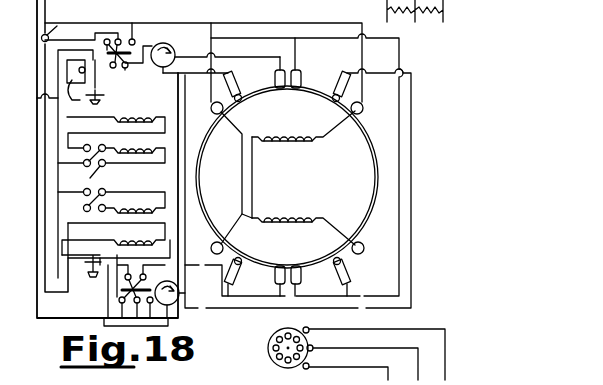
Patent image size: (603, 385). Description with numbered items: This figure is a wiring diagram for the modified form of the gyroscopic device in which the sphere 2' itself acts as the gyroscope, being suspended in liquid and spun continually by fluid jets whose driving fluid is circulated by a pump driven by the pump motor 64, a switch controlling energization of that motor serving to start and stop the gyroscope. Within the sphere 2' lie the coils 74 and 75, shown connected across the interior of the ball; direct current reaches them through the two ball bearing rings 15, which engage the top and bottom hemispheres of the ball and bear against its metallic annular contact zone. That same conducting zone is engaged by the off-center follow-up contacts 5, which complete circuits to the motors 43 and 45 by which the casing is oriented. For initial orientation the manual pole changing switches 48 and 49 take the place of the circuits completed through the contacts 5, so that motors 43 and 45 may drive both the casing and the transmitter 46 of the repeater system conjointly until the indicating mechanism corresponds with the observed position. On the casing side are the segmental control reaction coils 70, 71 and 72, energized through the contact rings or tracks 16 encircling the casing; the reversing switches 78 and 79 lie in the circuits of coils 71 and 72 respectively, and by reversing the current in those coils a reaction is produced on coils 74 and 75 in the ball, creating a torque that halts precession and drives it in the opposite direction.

The sphere 2' is at (287, 177).
The contacts 5 is at (252, 68).
The ball bearing rings 15 is at (224, 109).
The contact rings or tracks 16 is at (100, 256).
The motor 43 is at (173, 50).
The motor 45 is at (170, 282).
The transmitter 46 is at (85, 97).
The pole changing switch 48 is at (118, 68).
The pole changing switch 49 is at (136, 286).
The pump motor 64 is at (283, 362).
The segmental coil 70 is at (140, 113).
The segmental coil 71 is at (130, 155).
The segmental coil 72 is at (142, 203).
The coil 74 is at (300, 143).
The coil 75 is at (300, 216).
The reversing switch 78 is at (86, 165).
The reversing switch 79 is at (99, 168).